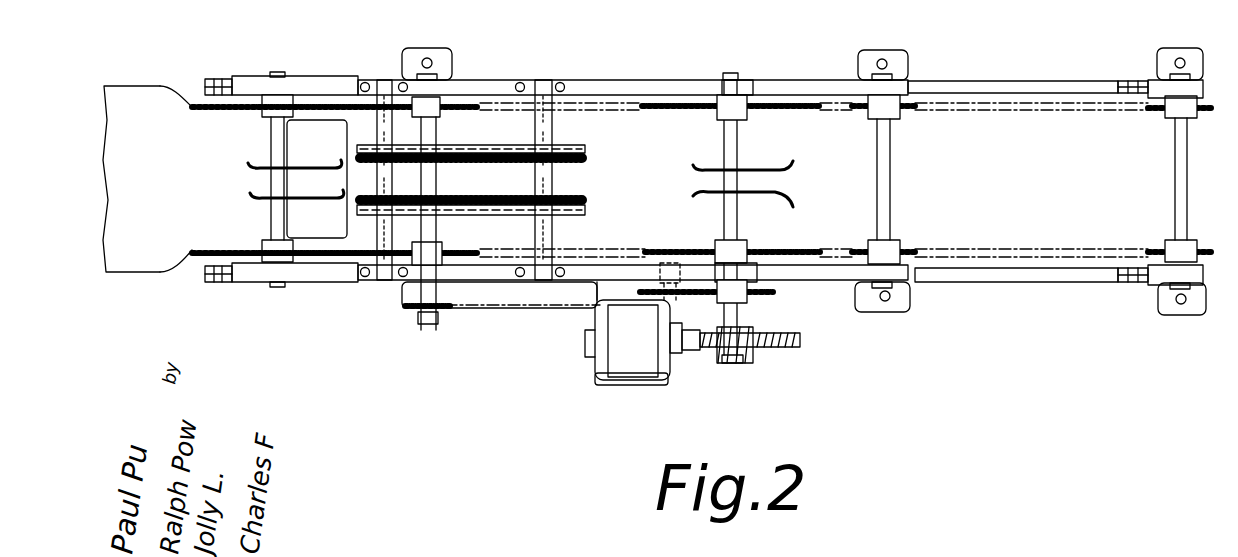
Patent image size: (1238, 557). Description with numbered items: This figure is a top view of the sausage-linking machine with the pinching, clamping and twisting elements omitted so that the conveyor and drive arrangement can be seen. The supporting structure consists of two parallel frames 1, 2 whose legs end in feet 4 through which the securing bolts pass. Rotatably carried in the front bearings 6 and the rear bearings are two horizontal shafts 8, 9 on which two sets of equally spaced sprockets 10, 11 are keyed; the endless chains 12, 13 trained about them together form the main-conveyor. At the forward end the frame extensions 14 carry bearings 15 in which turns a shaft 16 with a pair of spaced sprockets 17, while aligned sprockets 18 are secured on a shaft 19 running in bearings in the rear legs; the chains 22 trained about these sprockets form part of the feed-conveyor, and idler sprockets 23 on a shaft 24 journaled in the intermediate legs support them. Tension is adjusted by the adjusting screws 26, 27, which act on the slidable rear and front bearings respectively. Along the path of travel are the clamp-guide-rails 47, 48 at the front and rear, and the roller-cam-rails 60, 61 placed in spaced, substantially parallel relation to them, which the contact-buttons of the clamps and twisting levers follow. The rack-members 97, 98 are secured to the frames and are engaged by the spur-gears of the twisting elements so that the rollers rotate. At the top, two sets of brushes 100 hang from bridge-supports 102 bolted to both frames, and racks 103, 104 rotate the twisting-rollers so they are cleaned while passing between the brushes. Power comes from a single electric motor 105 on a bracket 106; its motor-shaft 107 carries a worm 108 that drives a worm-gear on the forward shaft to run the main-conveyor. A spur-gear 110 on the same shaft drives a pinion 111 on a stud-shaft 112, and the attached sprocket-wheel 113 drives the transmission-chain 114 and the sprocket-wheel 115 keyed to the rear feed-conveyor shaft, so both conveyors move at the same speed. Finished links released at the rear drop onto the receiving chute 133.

The frame 1 is at (843, 299).
The frame 2 is at (799, 83).
The feet 4 is at (445, 50).
The front bearings 6 is at (746, 82).
The horizontal shaft 8 is at (733, 72).
The horizontal shaft 9 is at (282, 74).
The sprockets 10 is at (815, 110).
The sprockets 11 is at (190, 112).
The endless chain 12 is at (611, 248).
The endless chain 13 is at (604, 96).
The frame extensions 14 is at (1013, 86).
The bearings 15 is at (1198, 80).
The shaft 16 is at (1190, 190).
The sprockets 17 is at (1208, 112).
The sprockets 18 is at (440, 110).
The shaft 19 is at (428, 326).
The chains 22 is at (1040, 108).
The idler sprockets 23 is at (910, 110).
The shaft 24 is at (892, 190).
The adjusting screw 26 is at (214, 78).
The adjusting screw 27 is at (1118, 82).
The clamp-guide-rail 47 is at (760, 165).
The clamp-guide-rail 48 is at (328, 163).
The roller-cam-rail 60 is at (770, 193).
The roller-cam-rail 61 is at (327, 192).
The rack-member 97 is at (585, 205).
The rack-member 98 is at (585, 150).
The brushes 100 is at (510, 166).
The bridge-supports 102 is at (383, 82).
The rack 103 is at (482, 215).
The rack 104 is at (480, 146).
The electric motor 105 is at (616, 350).
The bracket 106 is at (628, 386).
The motor-shaft 107 is at (702, 348).
The worm 108 is at (750, 362).
The spur-gear 110 is at (773, 294).
The pinion 111 is at (682, 294).
The stud-shaft 112 is at (672, 276).
The sprocket-wheel 113 is at (690, 352).
The transmission-chain 114 is at (520, 311).
The sprocket-wheel 115 is at (405, 294).
The receiving chute 133 is at (150, 275).